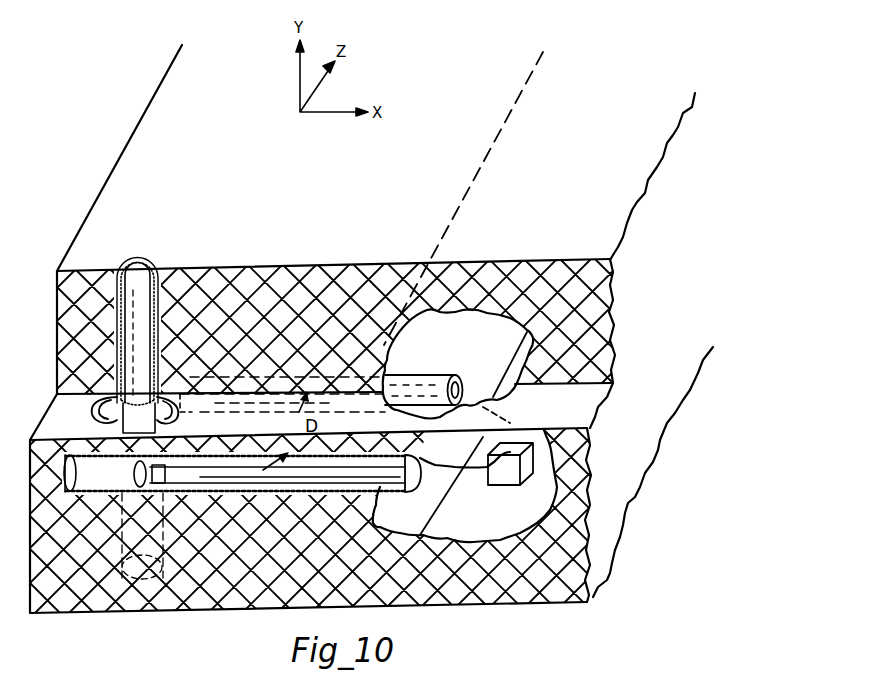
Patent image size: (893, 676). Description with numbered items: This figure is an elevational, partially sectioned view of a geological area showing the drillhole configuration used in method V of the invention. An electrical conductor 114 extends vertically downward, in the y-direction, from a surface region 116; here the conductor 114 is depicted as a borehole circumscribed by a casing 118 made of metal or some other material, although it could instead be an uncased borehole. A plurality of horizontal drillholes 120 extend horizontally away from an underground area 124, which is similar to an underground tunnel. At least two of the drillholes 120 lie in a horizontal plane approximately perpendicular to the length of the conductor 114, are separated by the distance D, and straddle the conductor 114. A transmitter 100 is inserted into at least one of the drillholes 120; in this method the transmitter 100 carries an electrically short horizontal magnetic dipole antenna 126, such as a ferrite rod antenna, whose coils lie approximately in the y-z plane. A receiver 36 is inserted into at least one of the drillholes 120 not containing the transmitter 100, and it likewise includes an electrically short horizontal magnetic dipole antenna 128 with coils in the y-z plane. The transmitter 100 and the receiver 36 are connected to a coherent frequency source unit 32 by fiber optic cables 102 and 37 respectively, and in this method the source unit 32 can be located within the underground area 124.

The electrical conductor 114 is at (135, 256).
The casing 118 is at (164, 273).
The surface region 116 is at (336, 232).
The underground area 124 is at (482, 344).
The horizontal drillholes 120 is at (407, 376).
The fiber optic cable 102 is at (366, 416).
The transmitter 100 is at (282, 406).
The horizontal magnetic dipole antenna 126 is at (183, 409).
The receiver 36 is at (172, 493).
The fiber optic cable 37 is at (296, 484).
The horizontal magnetic dipole antenna 128 is at (121, 478).
The coherent frequency source unit 32 is at (512, 486).